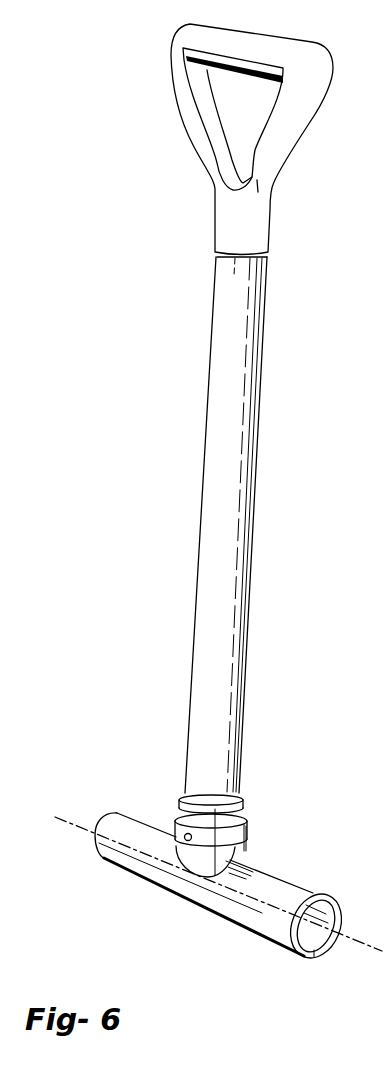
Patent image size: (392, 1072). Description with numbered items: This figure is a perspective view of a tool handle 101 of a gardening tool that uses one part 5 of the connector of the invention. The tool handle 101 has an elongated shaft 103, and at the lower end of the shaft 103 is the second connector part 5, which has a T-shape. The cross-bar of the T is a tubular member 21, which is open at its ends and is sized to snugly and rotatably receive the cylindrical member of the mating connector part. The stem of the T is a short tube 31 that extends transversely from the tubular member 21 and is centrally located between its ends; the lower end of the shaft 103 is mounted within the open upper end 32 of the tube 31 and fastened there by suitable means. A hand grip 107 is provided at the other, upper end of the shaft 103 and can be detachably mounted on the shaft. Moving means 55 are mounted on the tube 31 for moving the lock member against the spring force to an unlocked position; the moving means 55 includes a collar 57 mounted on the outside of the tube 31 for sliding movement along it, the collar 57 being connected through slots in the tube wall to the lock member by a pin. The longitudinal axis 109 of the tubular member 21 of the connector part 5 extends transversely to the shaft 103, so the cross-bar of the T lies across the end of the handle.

The second part of the connector 5 is at (297, 878).
The tubular member 21 is at (163, 878).
The tube 31 is at (181, 827).
The free end of the tube 32 is at (185, 797).
The moving means 55 is at (255, 825).
The collar 57 is at (176, 834).
The tool handle 101 is at (213, 315).
The shaft 103 is at (217, 393).
The hand grip 107 is at (203, 44).
The longitudinal axis 109 is at (82, 828).